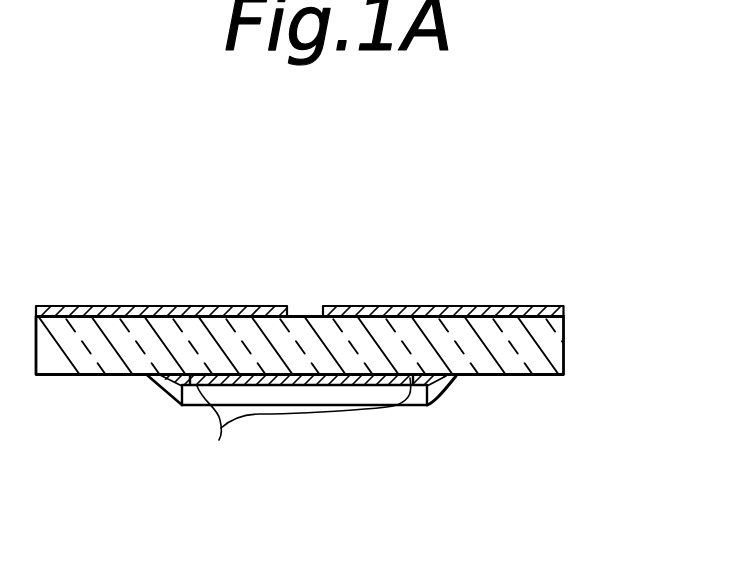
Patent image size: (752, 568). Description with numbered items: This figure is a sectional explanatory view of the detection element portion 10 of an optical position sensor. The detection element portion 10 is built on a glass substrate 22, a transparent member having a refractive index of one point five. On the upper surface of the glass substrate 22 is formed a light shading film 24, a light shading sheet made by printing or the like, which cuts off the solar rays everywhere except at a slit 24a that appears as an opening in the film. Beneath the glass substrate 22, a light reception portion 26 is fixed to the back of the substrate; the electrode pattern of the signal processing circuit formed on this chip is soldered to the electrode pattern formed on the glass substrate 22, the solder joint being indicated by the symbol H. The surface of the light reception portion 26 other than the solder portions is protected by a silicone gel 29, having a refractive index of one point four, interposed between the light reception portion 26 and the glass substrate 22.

The detection element portion 10 is at (359, 328).
The glass substrate 22 is at (566, 337).
The light shading film 24 is at (543, 306).
The slit 24a is at (305, 307).
The light reception portion 26 is at (412, 406).
The silicone gel 29 is at (180, 386).
The solder portions H is at (297, 437).